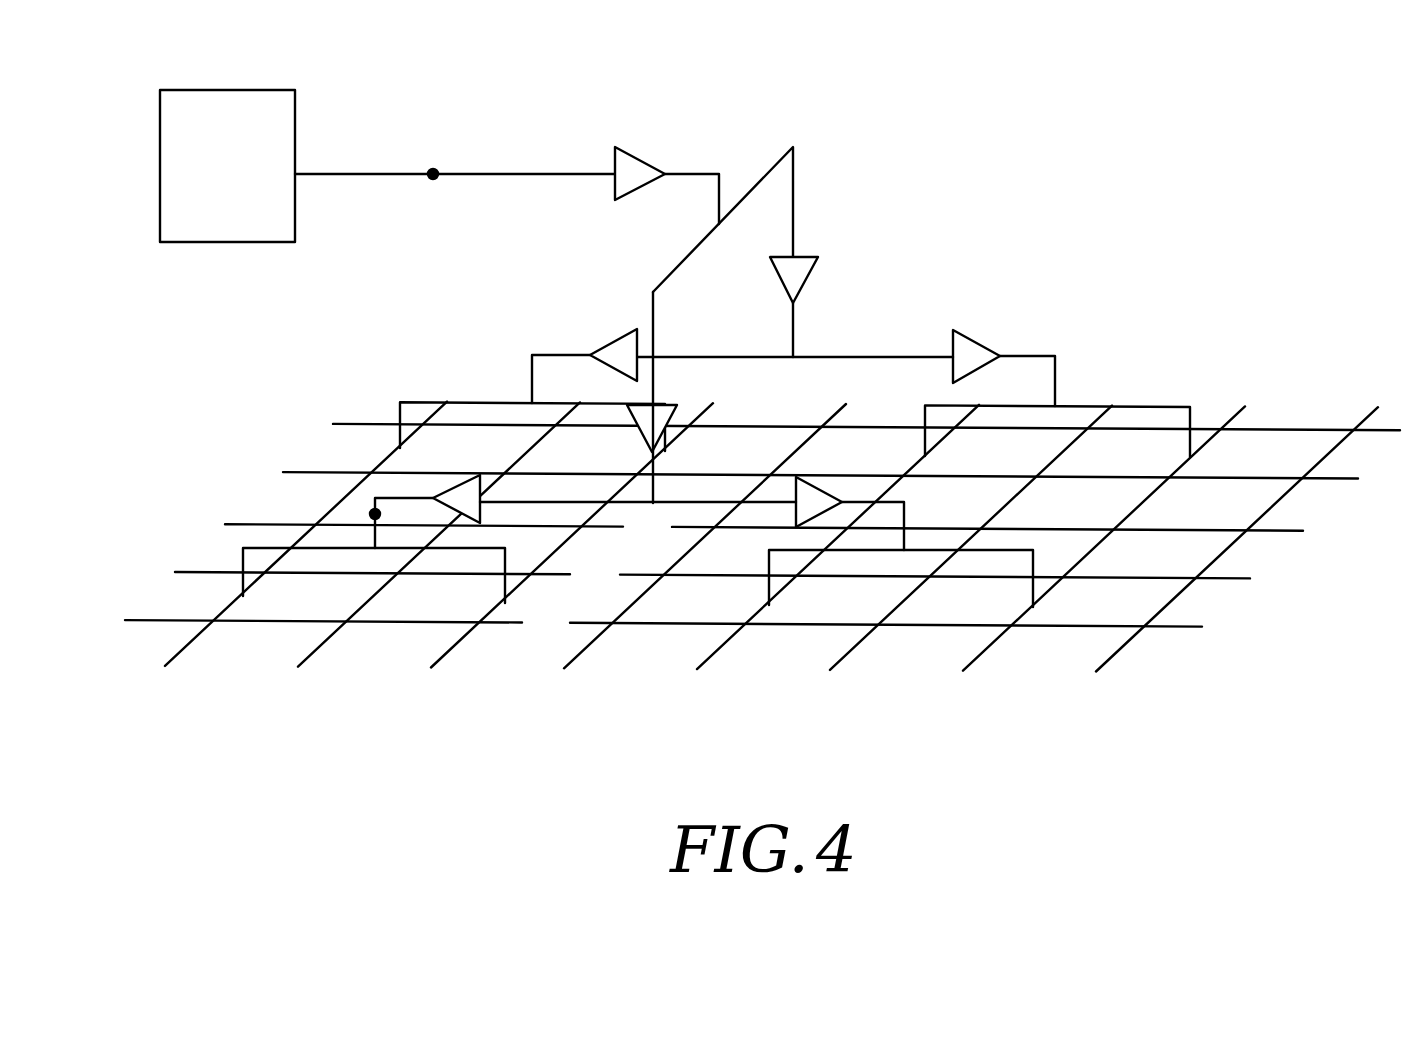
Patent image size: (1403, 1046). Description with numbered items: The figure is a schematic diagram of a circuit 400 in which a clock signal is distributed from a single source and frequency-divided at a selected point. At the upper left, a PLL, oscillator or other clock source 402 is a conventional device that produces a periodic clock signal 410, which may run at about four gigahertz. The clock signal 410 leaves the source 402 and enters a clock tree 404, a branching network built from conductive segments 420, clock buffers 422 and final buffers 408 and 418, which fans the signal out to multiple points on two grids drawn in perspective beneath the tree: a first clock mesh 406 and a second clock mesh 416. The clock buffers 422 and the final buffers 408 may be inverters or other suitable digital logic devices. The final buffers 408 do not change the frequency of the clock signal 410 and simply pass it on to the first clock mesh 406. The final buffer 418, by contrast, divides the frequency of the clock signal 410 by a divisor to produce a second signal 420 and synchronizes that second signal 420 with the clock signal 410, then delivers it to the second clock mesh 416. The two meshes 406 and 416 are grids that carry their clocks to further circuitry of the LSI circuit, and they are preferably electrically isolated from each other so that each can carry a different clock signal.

The circuit 400 is at (1318, 173).
The PLL, oscillator or other clock source 402 is at (226, 242).
The clock tree 404 is at (753, 170).
The first clock mesh 406 is at (1277, 422).
The final buffer 408 is at (620, 330).
The clock signal 410 is at (433, 176).
The second clock mesh 416 is at (205, 607).
The final buffer 418 is at (453, 483).
The conductive segments / second signal 420 is at (795, 200).
The clock buffer 422 is at (632, 148).